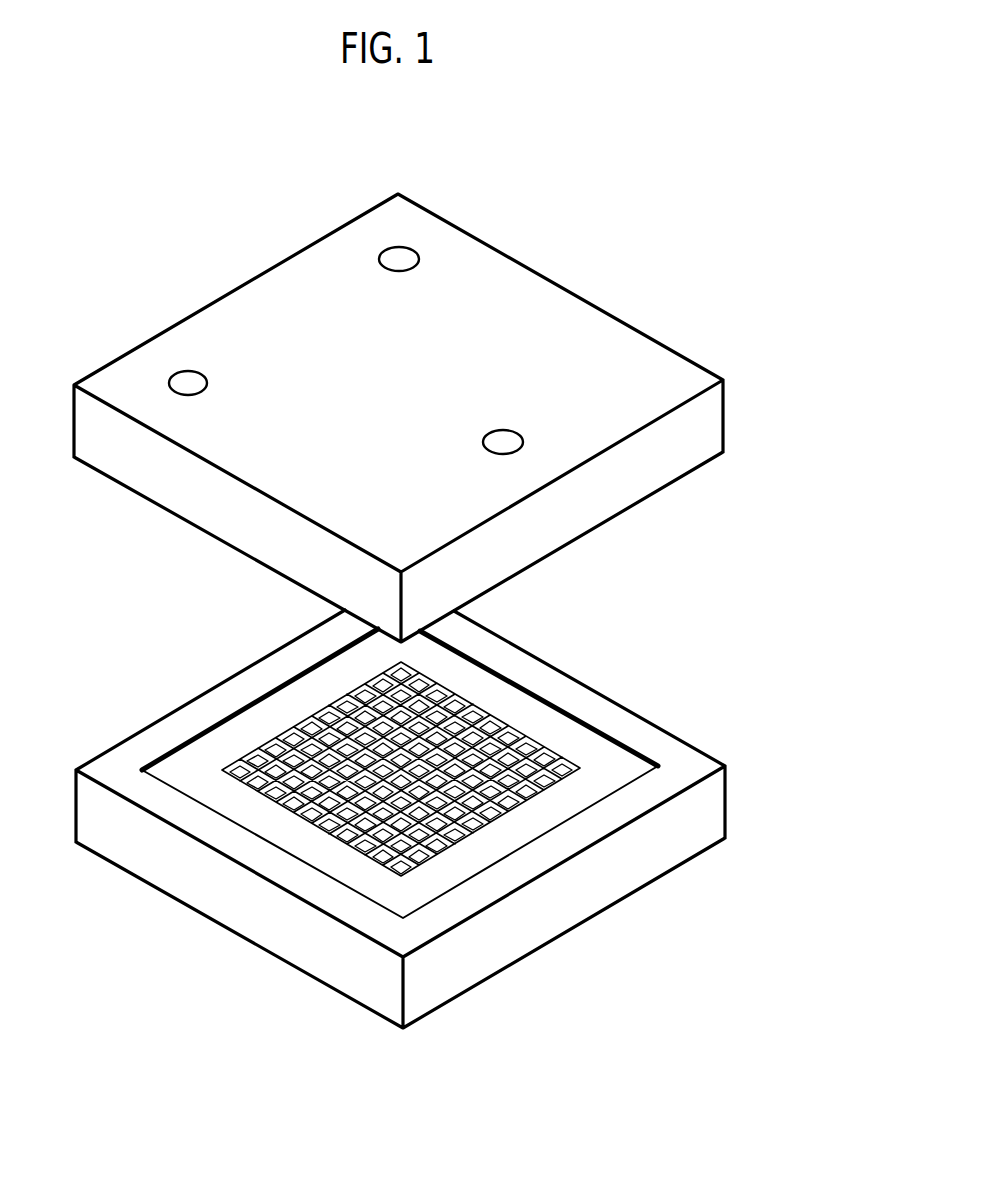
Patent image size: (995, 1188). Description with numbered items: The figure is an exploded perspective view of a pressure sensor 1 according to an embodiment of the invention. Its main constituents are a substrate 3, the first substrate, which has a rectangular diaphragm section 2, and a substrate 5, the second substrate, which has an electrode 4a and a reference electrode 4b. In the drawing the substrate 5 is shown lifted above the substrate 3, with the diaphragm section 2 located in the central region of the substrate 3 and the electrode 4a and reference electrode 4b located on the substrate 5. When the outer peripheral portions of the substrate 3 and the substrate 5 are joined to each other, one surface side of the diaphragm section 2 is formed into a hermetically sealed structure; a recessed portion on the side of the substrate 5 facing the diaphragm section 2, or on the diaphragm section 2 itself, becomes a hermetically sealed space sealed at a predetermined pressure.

The pressure sensor 1 is at (691, 568).
The diaphragm section 2 is at (496, 727).
The substrate 3 is at (718, 805).
The electrode 4a is at (403, 255).
The reference electrode 4b is at (187, 377).
The substrate 5 is at (717, 423).